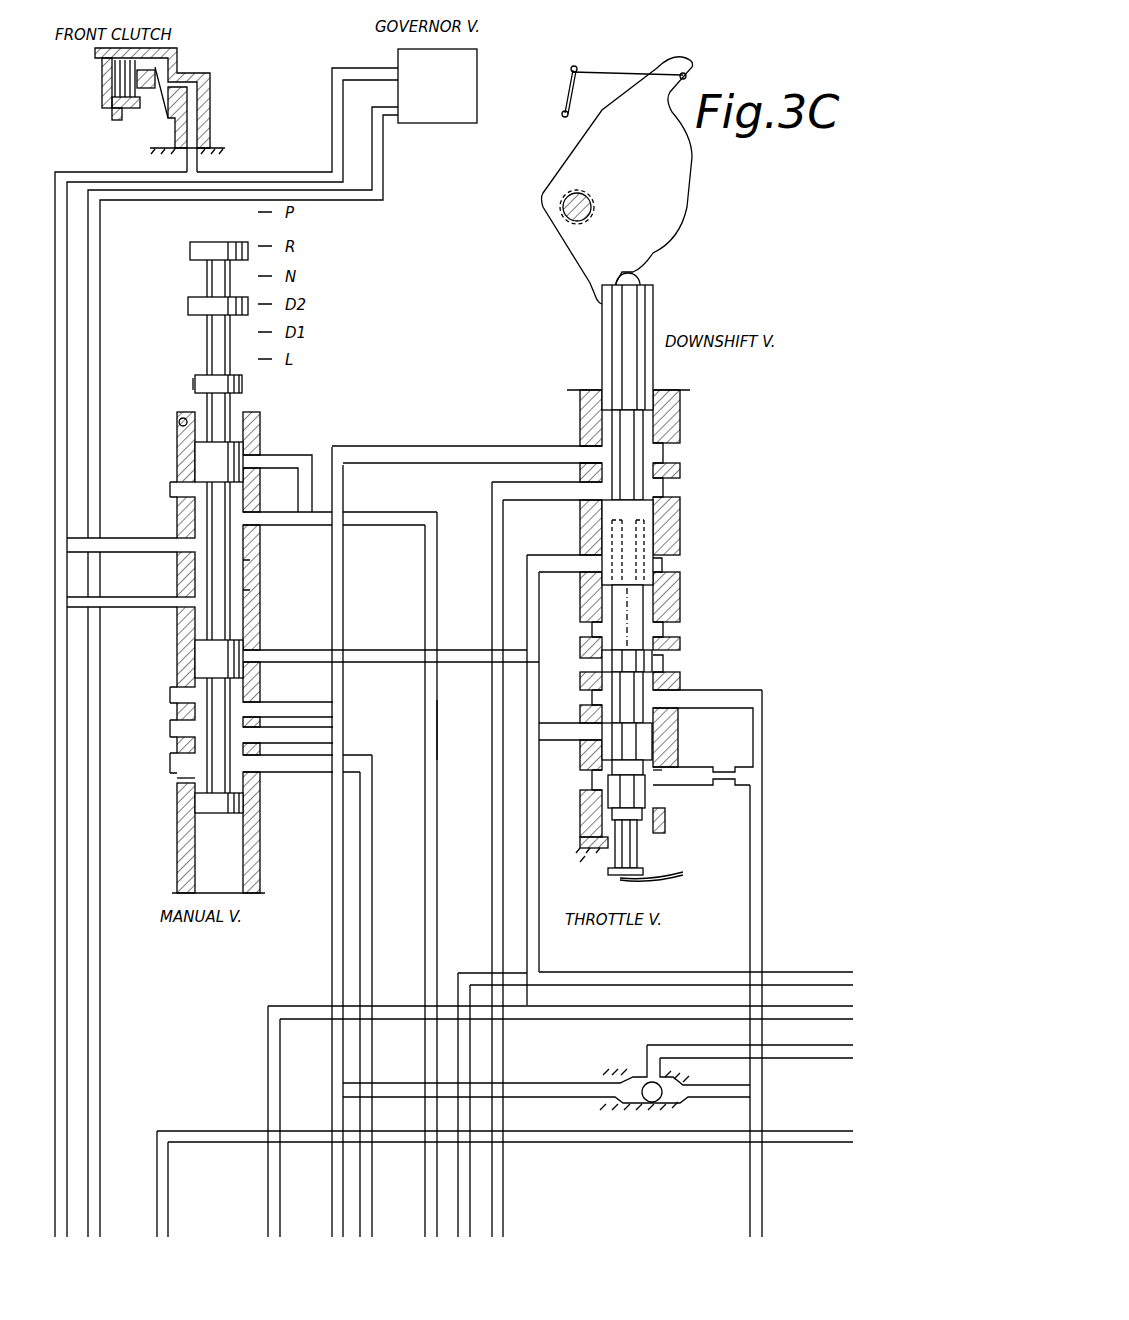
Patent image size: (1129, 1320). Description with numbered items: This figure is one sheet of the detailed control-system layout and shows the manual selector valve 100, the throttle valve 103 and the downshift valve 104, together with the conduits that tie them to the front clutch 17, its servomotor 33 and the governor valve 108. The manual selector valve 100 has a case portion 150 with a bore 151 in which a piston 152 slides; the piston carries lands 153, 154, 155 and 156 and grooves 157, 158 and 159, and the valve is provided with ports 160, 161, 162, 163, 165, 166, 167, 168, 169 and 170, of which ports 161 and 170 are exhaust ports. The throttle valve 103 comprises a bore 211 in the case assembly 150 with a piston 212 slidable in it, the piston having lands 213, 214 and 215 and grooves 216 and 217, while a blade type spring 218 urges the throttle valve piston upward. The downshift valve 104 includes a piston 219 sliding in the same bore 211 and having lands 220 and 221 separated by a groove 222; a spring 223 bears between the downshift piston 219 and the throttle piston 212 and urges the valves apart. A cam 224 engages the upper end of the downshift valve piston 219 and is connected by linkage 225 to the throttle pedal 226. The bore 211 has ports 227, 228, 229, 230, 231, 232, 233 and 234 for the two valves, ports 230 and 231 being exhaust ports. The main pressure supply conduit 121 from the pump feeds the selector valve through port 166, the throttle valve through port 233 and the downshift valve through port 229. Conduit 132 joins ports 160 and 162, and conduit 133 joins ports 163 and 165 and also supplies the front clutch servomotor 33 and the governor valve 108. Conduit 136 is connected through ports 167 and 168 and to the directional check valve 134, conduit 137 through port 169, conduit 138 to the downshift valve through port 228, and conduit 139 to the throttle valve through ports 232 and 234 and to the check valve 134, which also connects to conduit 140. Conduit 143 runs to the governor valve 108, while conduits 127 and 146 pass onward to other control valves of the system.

The front clutch 17 is at (84, 94).
The servomotor 33 is at (222, 65).
The manual selector valve 100 is at (218, 685).
The throttle valve 103 is at (589, 866).
The downshift valve 104 is at (683, 407).
The governor valve 108 is at (460, 96).
The conduit 121 is at (810, 1012).
The conduit 127 is at (810, 1142).
The conduit 132 is at (425, 560).
The conduit 133 is at (280, 176).
The directional check valve 134 is at (645, 1085).
The conduit 136 is at (444, 456).
The conduit 137 is at (360, 1197).
The conduit 138 is at (437, 737).
The conduit 139 is at (762, 890).
The conduit 140 is at (795, 1058).
The conduit 143 is at (100, 1182).
The conduit 146 is at (805, 972).
The case portion 150 is at (600, 830).
The bore 151 is at (183, 420).
The piston 152 is at (195, 383).
The land 153 is at (242, 387).
The land 154 is at (195, 462).
The land 155 is at (200, 660).
The land 156 is at (200, 815).
The groove 157 is at (210, 400).
The groove 158 is at (235, 578).
The groove 159 is at (205, 737).
The port 160 is at (250, 460).
The port 161 is at (185, 487).
The port 162 is at (245, 520).
The port 163 is at (172, 548).
The port 165 is at (172, 605).
The port 166 is at (258, 652).
The port 167 is at (255, 706).
The port 168 is at (250, 772).
The port 169 is at (250, 787).
The port 170 is at (190, 792).
The bore 211 is at (645, 840).
The piston 212 is at (631, 627).
The land 213 is at (610, 662).
The land 214 is at (640, 750).
The land 215 is at (645, 790).
The groove 216 is at (607, 695).
The groove 217 is at (596, 780).
The blade type spring 218 is at (652, 877).
The piston 219 is at (594, 332).
The land 220 is at (612, 365).
The land 221 is at (645, 510).
The groove 222 is at (665, 447).
The spring 223 is at (665, 595).
The cam 224 is at (692, 215).
The linkage 225 is at (625, 72).
The throttle pedal 226 is at (571, 86).
The port 227 is at (592, 452).
The port 228 is at (595, 492).
The port 229 is at (598, 567).
The port 230 is at (660, 630).
The port 231 is at (662, 660).
The port 232 is at (707, 737).
The port 233 is at (598, 738).
The port 234 is at (660, 780).